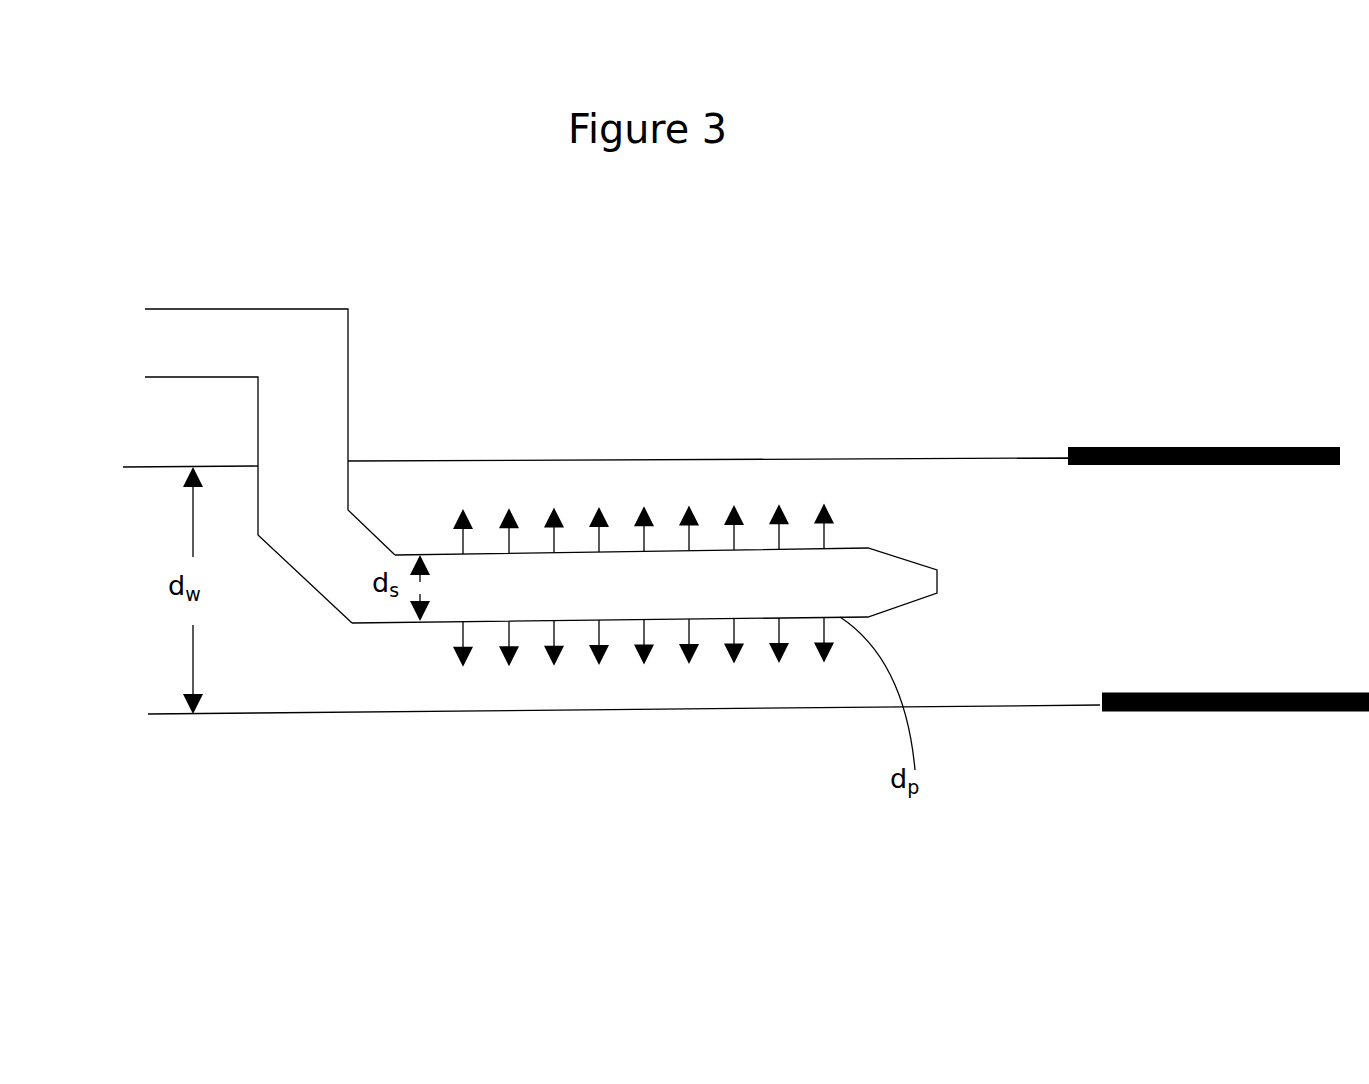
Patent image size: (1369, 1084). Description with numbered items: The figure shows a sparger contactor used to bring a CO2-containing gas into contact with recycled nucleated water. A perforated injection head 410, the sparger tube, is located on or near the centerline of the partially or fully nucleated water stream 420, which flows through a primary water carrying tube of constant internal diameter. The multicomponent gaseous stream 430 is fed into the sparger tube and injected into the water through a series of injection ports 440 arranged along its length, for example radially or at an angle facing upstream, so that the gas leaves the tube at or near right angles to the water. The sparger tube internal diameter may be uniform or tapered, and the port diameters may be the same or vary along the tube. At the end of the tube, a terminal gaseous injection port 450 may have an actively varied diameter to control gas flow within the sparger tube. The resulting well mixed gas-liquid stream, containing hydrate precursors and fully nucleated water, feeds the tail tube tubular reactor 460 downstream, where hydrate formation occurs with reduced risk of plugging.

The perforated injection head 410 is at (670, 578).
The partially or fully nucleated water stream 420 is at (130, 627).
The multicomponent gaseous stream 430 is at (195, 333).
The injection ports 440 is at (452, 623).
The terminal gaseous injection port 450 is at (978, 572).
The tail tube tubular reactor 460 is at (1218, 579).